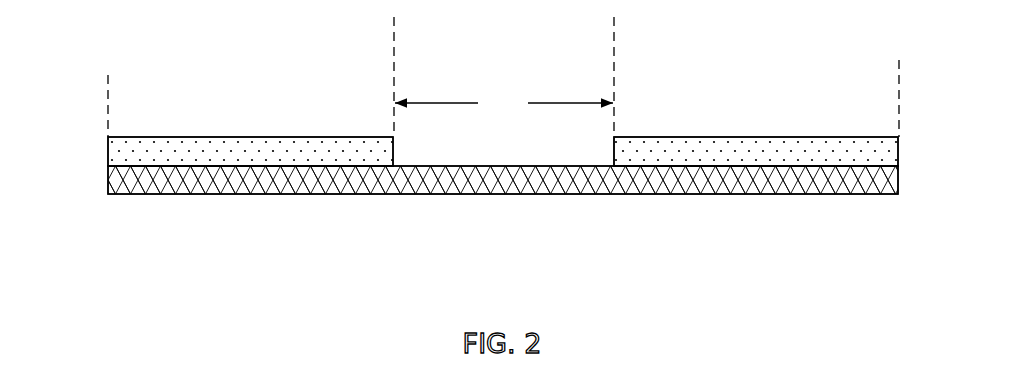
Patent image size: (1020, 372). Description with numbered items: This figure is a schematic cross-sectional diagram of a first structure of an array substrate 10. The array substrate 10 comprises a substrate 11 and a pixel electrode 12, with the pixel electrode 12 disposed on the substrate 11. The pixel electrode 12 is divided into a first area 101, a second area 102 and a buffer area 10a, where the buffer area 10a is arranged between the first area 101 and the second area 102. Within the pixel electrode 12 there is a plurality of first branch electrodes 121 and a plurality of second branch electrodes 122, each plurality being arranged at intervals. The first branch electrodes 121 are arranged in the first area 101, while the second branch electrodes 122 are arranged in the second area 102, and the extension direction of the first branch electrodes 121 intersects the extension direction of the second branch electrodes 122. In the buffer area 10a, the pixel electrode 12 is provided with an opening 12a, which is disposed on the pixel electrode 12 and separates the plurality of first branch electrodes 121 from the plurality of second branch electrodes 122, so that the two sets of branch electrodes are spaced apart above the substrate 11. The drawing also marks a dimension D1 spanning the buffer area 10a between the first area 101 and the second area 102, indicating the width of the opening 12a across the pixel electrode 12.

The array substrate 10 is at (125, 53).
The first area 101 is at (257, 118).
The second area 102 is at (778, 100).
The buffer area 10a is at (518, 72).
The substrate 11 is at (884, 176).
The pixel electrode 12 is at (503, 210).
The first branch electrodes 121 is at (345, 158).
The second branch electrodes 122 is at (755, 182).
The opening 12a is at (507, 152).
The width of the opening D1 is at (504, 104).